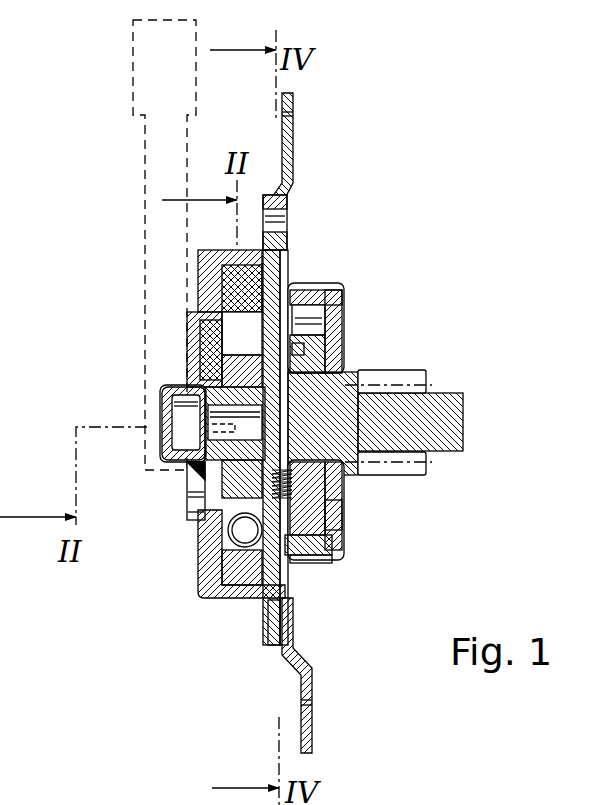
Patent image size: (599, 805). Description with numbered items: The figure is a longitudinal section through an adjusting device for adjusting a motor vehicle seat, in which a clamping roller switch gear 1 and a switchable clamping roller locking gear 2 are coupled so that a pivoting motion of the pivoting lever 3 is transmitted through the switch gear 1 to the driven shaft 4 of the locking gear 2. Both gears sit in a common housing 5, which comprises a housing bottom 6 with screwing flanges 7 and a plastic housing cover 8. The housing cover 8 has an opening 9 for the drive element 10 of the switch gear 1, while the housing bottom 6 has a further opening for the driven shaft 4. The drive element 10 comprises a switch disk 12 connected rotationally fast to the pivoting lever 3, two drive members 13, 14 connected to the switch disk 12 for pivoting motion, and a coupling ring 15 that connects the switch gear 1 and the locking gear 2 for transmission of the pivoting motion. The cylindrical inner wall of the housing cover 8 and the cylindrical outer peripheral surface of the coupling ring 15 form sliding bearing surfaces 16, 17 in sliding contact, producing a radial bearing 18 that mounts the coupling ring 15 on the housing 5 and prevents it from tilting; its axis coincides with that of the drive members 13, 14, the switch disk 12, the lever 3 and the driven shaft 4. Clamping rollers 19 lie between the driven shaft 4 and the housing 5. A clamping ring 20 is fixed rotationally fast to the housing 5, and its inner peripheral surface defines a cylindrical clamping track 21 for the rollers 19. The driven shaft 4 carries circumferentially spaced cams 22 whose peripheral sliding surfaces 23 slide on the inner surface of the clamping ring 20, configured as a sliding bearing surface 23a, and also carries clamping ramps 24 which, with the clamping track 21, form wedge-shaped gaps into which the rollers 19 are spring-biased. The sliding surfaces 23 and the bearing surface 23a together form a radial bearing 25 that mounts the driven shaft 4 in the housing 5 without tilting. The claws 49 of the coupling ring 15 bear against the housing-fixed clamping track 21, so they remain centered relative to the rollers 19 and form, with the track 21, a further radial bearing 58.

The clamping roller switch gear 1 is at (173, 660).
The switchable clamping roller locking gear 2 is at (313, 570).
The pivoting lever 3 is at (160, 150).
The driven shaft 4 is at (450, 412).
The housing 5 is at (296, 249).
The housing bottom 6 is at (293, 155).
The screwing flanges 7 is at (324, 146).
The housing cover 8 is at (268, 630).
The opening 9 is at (190, 485).
The drive element 10 is at (160, 440).
The switch disk 12 is at (162, 398).
The drive member 13 is at (152, 347).
The drive member 14 is at (200, 343).
The coupling ring 15 is at (198, 258).
The sliding bearing surface 16 is at (230, 566).
The sliding bearing surface 17 is at (215, 546).
The radial bearing 18 is at (285, 600).
The clamping rollers 19 is at (318, 322).
The clamping ring 20 is at (315, 299).
The cylindrical clamping track 21 is at (346, 306).
The cams 22 is at (360, 531).
The sliding surfaces 23 is at (340, 555).
The sliding bearing surface 23a is at (335, 520).
The clamping ramps 24 is at (300, 337).
The radial bearing 25 is at (360, 550).
The claws 49 is at (296, 350).
The radial bearing 58 is at (330, 545).